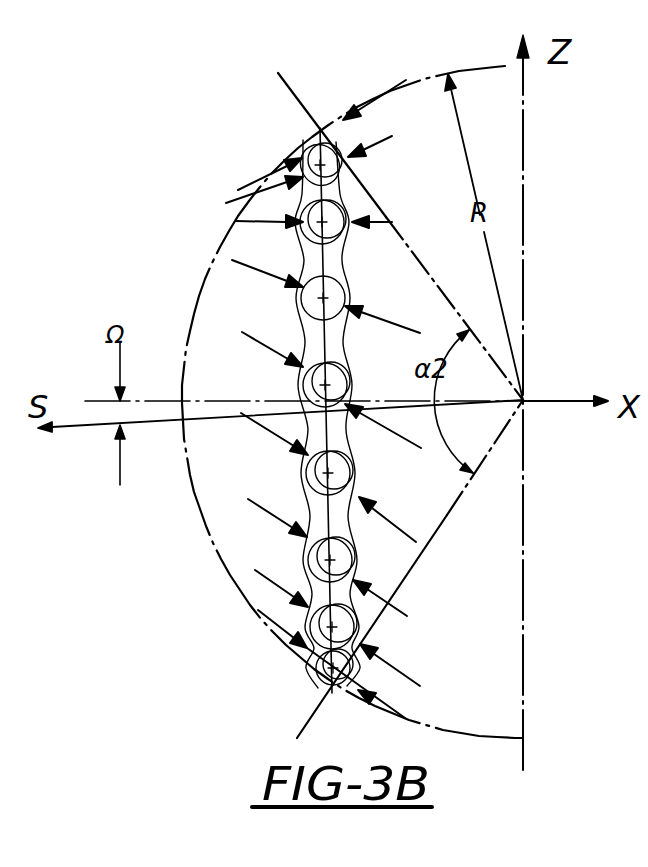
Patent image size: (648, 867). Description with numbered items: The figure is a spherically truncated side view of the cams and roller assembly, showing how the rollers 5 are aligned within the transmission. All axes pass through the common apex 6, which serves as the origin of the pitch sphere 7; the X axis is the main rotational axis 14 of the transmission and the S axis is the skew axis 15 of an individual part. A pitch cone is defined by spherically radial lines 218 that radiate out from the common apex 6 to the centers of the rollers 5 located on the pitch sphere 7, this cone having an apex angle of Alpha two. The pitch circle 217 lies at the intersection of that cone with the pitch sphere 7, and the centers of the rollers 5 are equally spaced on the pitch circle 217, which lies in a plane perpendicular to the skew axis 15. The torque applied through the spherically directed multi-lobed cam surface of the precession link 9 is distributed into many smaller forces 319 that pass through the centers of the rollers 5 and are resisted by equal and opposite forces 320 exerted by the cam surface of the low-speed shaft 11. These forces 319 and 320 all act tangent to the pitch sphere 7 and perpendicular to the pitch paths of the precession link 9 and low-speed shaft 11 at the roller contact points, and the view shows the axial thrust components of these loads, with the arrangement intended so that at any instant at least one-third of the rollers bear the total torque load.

The rollers 5 is at (363, 237).
The common apex 6 is at (527, 393).
The pitch sphere 7 is at (212, 540).
The precession link 9 is at (353, 363).
The low-speed shaft 11 is at (298, 337).
The main rotational axis 14 is at (97, 430).
The skew axis 15 is at (100, 398).
The pitch circle 217 is at (302, 513).
The spherically radial lines 218 is at (268, 82).
The forces 319 is at (407, 616).
The equal and opposite forces 320 is at (250, 503).